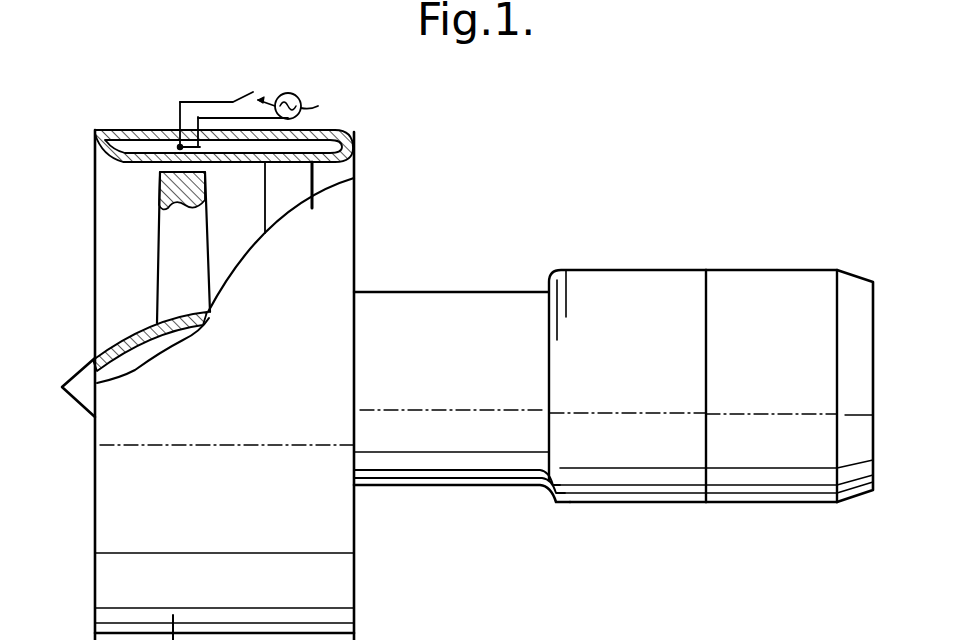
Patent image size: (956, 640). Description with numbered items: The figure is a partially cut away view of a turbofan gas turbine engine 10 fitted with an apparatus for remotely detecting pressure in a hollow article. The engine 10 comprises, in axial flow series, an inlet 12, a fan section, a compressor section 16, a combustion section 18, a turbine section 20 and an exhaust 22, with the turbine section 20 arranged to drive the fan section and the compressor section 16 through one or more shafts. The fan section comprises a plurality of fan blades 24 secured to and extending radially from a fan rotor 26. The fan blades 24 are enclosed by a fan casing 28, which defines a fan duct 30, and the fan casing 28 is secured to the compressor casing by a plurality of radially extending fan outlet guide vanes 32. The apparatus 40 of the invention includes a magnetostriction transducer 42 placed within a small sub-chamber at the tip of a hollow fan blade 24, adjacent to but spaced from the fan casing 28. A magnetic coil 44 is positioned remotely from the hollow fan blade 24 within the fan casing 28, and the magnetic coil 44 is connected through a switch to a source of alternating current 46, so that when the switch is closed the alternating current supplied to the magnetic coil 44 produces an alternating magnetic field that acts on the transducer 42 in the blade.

The turbofan gas turbine engine 10 is at (442, 275).
The inlet 12 is at (94, 588).
The compressor section 16 is at (447, 462).
The combustion section 18 is at (636, 473).
The turbine section 20 is at (777, 475).
The exhaust 22 is at (863, 470).
The fan blade 24 is at (170, 248).
The fan rotor 26 is at (137, 330).
The fan casing 28 is at (338, 122).
The fan duct 30 is at (248, 187).
The fan outlet guide vane 32 is at (278, 207).
The apparatus for remotely detecting pressure 40 is at (314, 92).
The magnetostriction transducer 42 is at (160, 185).
The magnetic coil 44 is at (173, 147).
The source of alternating current 46 is at (301, 108).